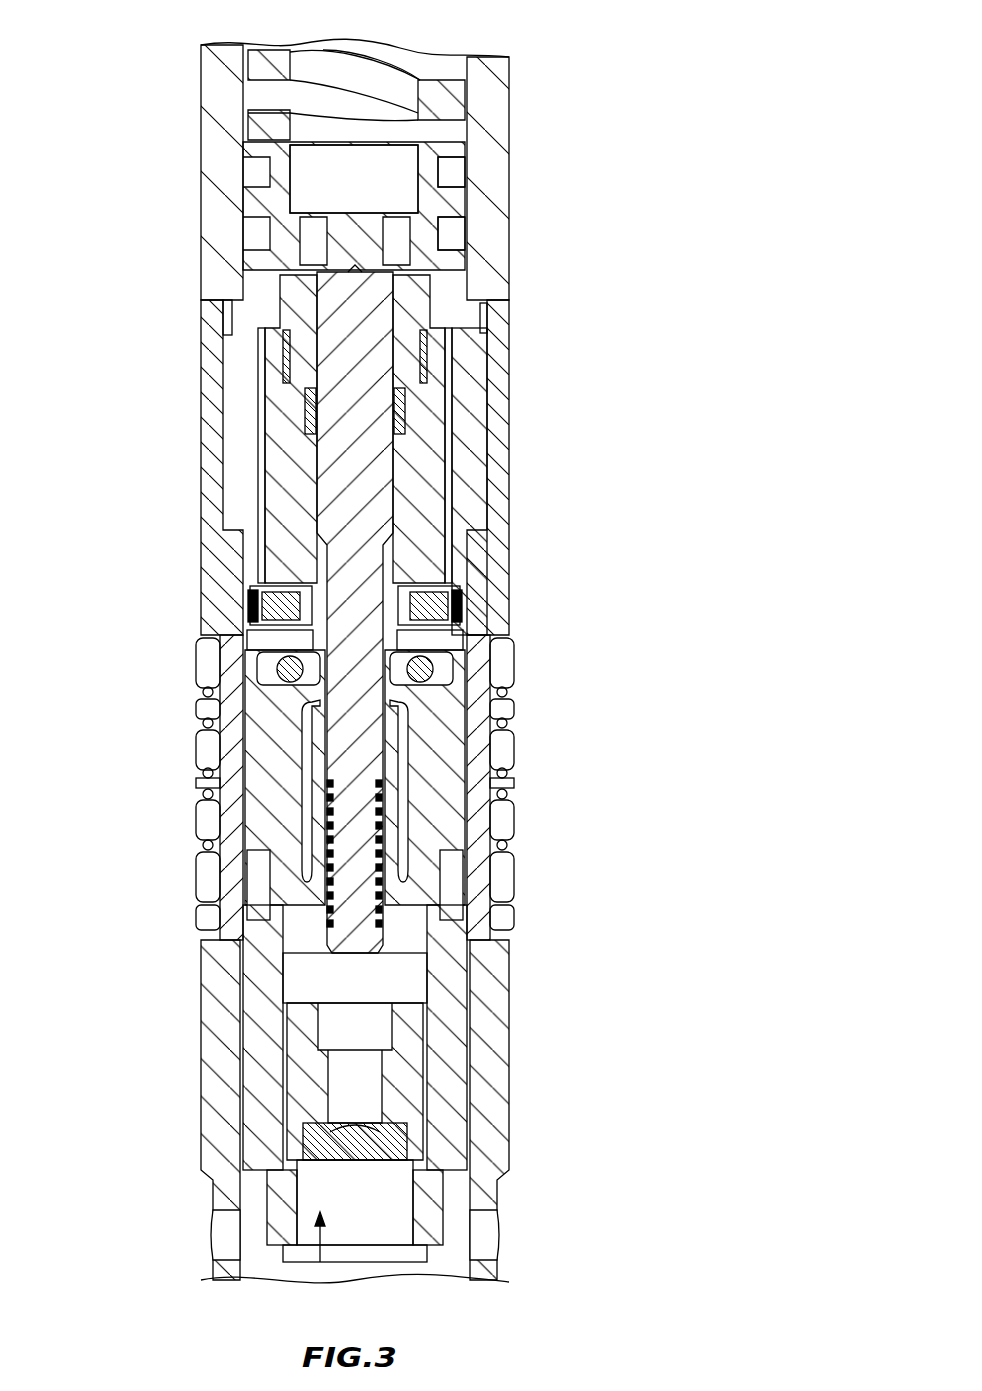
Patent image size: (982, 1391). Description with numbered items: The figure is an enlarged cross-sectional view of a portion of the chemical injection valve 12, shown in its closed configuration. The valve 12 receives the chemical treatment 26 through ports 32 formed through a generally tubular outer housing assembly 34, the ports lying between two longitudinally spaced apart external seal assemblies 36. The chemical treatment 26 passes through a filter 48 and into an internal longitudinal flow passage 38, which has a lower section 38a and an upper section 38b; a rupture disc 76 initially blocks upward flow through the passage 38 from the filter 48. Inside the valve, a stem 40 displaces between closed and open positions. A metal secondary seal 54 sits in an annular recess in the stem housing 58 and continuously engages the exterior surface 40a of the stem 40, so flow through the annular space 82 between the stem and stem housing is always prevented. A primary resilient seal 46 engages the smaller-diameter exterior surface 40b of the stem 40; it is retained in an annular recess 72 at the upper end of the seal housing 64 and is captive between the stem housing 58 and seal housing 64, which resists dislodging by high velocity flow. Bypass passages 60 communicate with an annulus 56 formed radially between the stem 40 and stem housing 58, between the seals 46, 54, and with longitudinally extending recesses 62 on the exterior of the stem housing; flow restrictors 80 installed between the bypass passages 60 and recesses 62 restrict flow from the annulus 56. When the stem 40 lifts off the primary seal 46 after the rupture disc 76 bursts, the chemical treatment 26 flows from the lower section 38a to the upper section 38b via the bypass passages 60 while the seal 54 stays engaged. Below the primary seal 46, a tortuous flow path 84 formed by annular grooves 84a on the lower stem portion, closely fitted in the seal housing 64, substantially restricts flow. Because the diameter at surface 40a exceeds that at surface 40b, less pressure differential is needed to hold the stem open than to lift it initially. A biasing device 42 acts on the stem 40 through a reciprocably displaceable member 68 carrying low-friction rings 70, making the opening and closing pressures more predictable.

The chemical injection valve 12 is at (710, 58).
The chemical treatment 26 is at (345, 1255).
The ports 32 is at (223, 1228).
The outer housing assembly 34 is at (510, 106).
The external seal assemblies 36 is at (200, 752).
The internal longitudinal flow passage 38 is at (380, 976).
The lower section of the passage 38a is at (352, 1172).
The upper section of the passage 38b is at (345, 210).
The stem 40 is at (402, 461).
The exterior surface of the stem 40a is at (300, 460).
The exterior surface of the stem 40b is at (425, 658).
The biasing device 42 is at (243, 66).
The primary resilient seal 46 is at (433, 669).
The filter 48 is at (273, 1263).
The secondary seal 54 is at (410, 418).
The annulus 56 is at (452, 632).
The stem housing 58 is at (455, 493).
The bypass passages 60 is at (268, 592).
The longitudinally extending recesses 62 is at (255, 545).
The seal housing 64 is at (470, 762).
The reciprocably displaceable member 68 is at (245, 203).
The friction-reducing rings 70 is at (472, 178).
The annular recess 72 is at (290, 712).
The rupture disc 76 is at (345, 1137).
The flow restrictors 80 is at (275, 612).
The annular space 82 is at (290, 590).
The tortuous flow path 84 is at (462, 830).
The annular grooves 84a is at (328, 789).